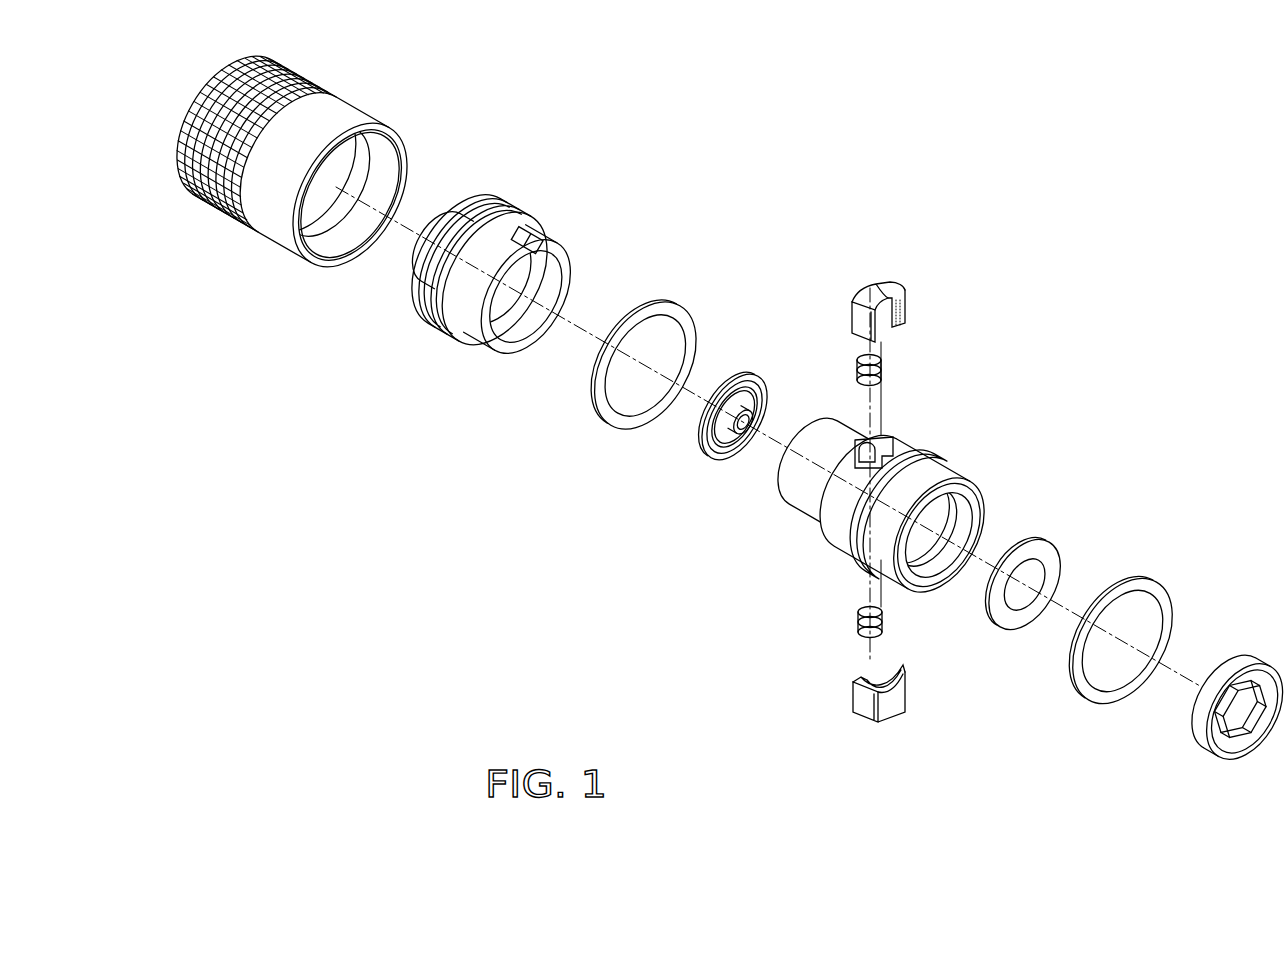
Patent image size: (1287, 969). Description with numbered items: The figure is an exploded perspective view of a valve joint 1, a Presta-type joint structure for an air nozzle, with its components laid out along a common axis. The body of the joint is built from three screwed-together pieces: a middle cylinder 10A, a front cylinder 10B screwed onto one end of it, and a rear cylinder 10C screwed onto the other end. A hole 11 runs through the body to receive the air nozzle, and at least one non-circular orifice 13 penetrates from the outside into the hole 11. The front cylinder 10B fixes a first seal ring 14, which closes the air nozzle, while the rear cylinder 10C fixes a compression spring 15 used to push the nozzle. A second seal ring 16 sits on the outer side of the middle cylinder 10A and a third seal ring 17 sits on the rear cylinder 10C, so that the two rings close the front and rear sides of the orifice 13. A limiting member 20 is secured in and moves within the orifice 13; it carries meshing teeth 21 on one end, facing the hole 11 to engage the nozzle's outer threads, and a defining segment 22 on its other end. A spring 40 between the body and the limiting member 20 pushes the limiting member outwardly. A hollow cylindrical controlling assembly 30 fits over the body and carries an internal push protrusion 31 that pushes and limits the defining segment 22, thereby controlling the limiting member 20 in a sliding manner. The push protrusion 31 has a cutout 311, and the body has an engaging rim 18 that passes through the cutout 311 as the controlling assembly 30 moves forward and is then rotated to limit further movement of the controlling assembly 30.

The valve joint 1 is at (522, 583).
The middle cylinder 10A is at (945, 443).
The front cylinder 10B is at (1203, 720).
The rear cylinder 10C is at (460, 347).
The hole 11 is at (947, 512).
The orifice 13 is at (890, 443).
The first seal ring 14 is at (1043, 563).
The compression spring 15 is at (712, 440).
The second seal ring 16 is at (1165, 598).
The third seal ring 17 is at (598, 405).
The engaging rim 18 is at (513, 238).
The limiting member 20 is at (912, 298).
The meshing teeth 21 is at (903, 668).
The defining segment 22 is at (888, 722).
The controlling assembly 30 is at (358, 112).
The push protrusion 31 is at (353, 250).
The cutout 311 is at (307, 226).
The spring 40 is at (852, 363).